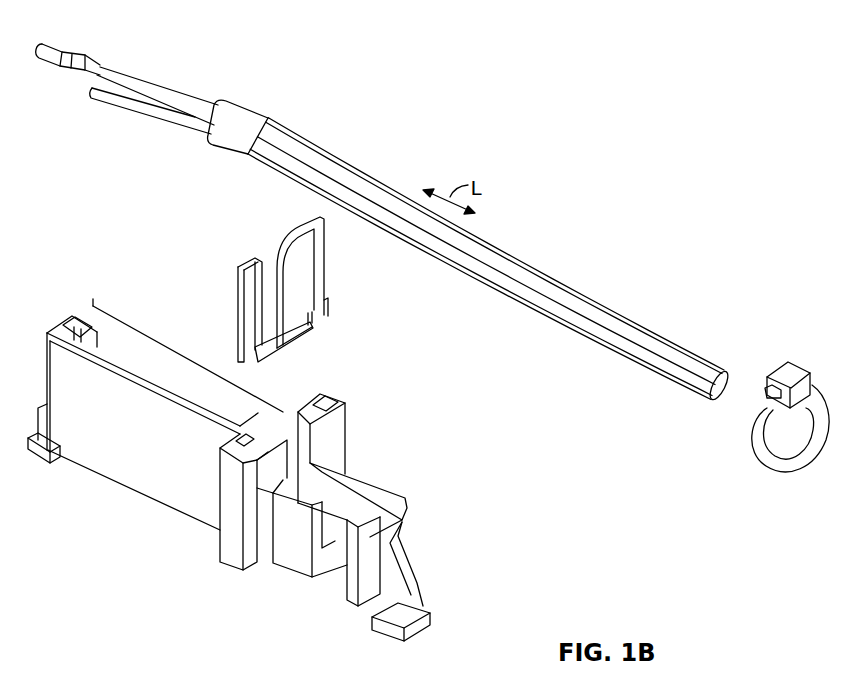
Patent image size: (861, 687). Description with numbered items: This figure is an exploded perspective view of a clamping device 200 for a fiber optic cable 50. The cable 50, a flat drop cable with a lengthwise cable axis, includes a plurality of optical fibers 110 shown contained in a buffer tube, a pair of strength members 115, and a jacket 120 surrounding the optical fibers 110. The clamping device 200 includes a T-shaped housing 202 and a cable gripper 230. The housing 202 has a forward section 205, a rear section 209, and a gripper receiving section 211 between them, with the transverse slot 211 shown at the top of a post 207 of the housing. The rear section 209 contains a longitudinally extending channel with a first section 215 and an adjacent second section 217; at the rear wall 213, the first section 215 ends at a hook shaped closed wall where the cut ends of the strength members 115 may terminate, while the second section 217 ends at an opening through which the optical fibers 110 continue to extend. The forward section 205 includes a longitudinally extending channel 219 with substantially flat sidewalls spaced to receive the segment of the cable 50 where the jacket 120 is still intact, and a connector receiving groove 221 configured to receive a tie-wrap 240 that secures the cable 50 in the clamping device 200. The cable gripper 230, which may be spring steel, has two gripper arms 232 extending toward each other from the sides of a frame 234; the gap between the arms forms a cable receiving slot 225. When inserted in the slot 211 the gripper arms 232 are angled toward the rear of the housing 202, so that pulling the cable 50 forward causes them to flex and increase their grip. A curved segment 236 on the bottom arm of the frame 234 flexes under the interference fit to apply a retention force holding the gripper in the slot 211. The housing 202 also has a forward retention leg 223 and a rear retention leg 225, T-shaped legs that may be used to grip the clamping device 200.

The fiber optic cable 50 is at (650, 328).
The optical fibers 110 is at (86, 63).
The strength members 115 is at (150, 80).
The jacket 120 is at (512, 265).
The clamping device 200 is at (621, 79).
The housing 202 is at (157, 480).
The forward section 205 is at (353, 478).
The post 207 is at (333, 397).
The rear section 209 is at (167, 330).
The gripper receiving section 211 is at (303, 407).
The rear wall 213 is at (60, 322).
The first section 215 is at (80, 318).
The second section 217 is at (122, 333).
The channel 219 is at (380, 523).
The connector receiving groove 221 is at (338, 583).
The forward retention leg 223 is at (414, 621).
The rear retention leg 225 is at (40, 462).
The cable gripper 230 is at (299, 276).
The gripper arms 232 is at (279, 258).
The frame 234 is at (272, 353).
The curved segment 236 is at (300, 340).
The tie-wrap 240 is at (785, 372).